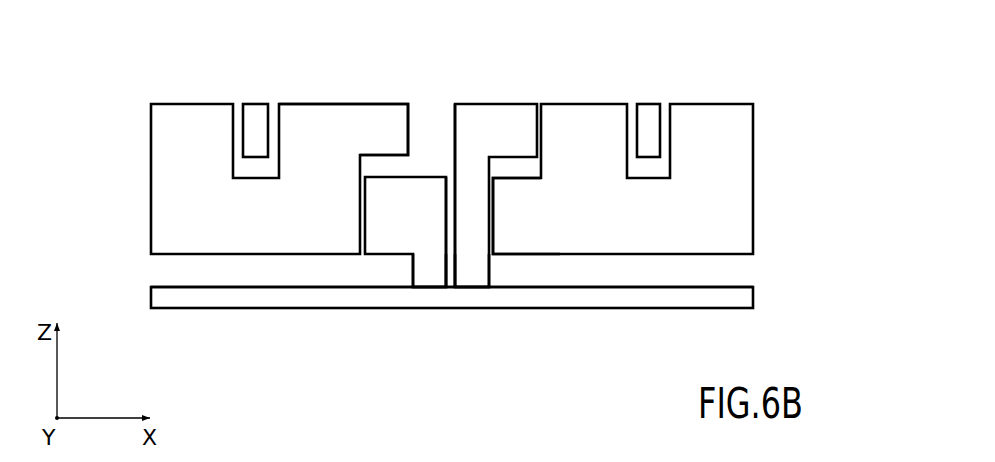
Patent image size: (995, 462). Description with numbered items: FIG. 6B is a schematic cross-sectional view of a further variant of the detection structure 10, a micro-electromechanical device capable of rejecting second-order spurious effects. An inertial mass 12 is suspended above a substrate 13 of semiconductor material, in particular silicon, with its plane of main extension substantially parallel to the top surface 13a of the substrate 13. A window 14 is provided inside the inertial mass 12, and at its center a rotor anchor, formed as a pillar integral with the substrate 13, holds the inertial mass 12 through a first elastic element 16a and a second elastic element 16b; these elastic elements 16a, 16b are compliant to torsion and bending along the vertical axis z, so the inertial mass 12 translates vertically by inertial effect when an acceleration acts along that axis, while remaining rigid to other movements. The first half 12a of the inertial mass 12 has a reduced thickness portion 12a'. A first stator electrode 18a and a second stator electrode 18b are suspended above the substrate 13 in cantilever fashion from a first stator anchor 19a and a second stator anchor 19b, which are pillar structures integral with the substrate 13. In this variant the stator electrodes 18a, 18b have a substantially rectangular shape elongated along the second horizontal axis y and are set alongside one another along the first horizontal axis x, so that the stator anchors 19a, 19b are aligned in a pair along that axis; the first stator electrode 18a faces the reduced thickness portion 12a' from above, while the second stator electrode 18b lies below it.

The stator core assembly 10 is at (463, 184).
The inertial mass 12 is at (407, 191).
The first half of the inertial mass 12a is at (449, 134).
The reduced thickness portion 12a' is at (419, 198).
The substrate 13 is at (737, 295).
The top surface of the substrate 13a is at (732, 283).
The window 14 is at (435, 117).
The first elastic element 16a is at (254, 115).
The second elastic element 16b is at (643, 117).
The first stator electrode 18a is at (514, 118).
The second stator electrode 18b is at (393, 190).
The first stator anchor 19a is at (471, 266).
The second stator anchor 19b is at (428, 272).